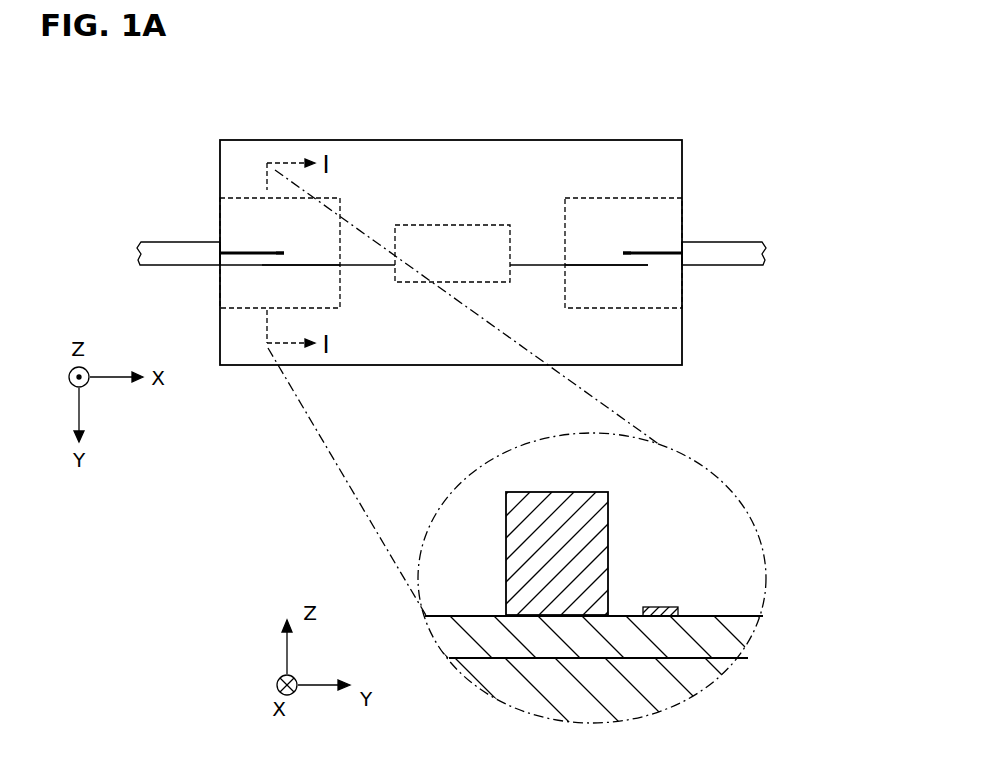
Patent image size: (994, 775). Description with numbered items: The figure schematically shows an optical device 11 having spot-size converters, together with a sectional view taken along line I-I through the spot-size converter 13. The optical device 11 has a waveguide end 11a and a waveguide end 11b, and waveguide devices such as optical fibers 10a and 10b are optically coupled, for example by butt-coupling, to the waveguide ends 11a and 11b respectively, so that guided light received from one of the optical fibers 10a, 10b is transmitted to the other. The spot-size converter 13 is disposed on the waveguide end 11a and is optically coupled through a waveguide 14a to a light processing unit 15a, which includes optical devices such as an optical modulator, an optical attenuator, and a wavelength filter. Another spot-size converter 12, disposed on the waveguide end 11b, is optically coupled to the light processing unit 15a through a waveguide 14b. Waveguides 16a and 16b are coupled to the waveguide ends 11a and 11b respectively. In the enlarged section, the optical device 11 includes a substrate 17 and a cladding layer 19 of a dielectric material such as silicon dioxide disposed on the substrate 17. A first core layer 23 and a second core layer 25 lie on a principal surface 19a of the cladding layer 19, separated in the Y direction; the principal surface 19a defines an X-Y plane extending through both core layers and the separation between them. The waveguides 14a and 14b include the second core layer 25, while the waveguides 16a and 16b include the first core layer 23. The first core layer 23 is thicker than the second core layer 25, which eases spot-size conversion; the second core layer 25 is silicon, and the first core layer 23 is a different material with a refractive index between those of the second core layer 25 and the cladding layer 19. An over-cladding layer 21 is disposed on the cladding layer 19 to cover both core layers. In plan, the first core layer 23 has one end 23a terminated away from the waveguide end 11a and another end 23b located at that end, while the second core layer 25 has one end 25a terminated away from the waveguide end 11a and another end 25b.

The optical device 11 is at (612, 115).
The optical fiber 10a is at (175, 255).
The optical fiber 10b is at (727, 255).
The waveguide end 11a is at (219, 243).
The waveguide end 11b is at (688, 242).
The spot-size converter 12 is at (565, 198).
The spot-size converter 13 is at (347, 198).
The waveguide 14a is at (367, 267).
The waveguide 14b is at (538, 267).
The light processing unit 15a is at (447, 225).
The waveguide 16a is at (252, 253).
The waveguide 16b is at (653, 253).
The substrate 17 is at (688, 688).
The cladding layer 19 is at (722, 640).
The principal surface 19a is at (733, 615).
The over-cladding layer 21 is at (697, 495).
The first core layer 23 is at (553, 492).
The one end of first core layer 23a is at (283, 253).
The other end of first core layer 23b is at (623, 253).
The second core layer 25 is at (655, 607).
The one end of second core layer 25a is at (265, 265).
The other end of second core layer 25b is at (645, 265).